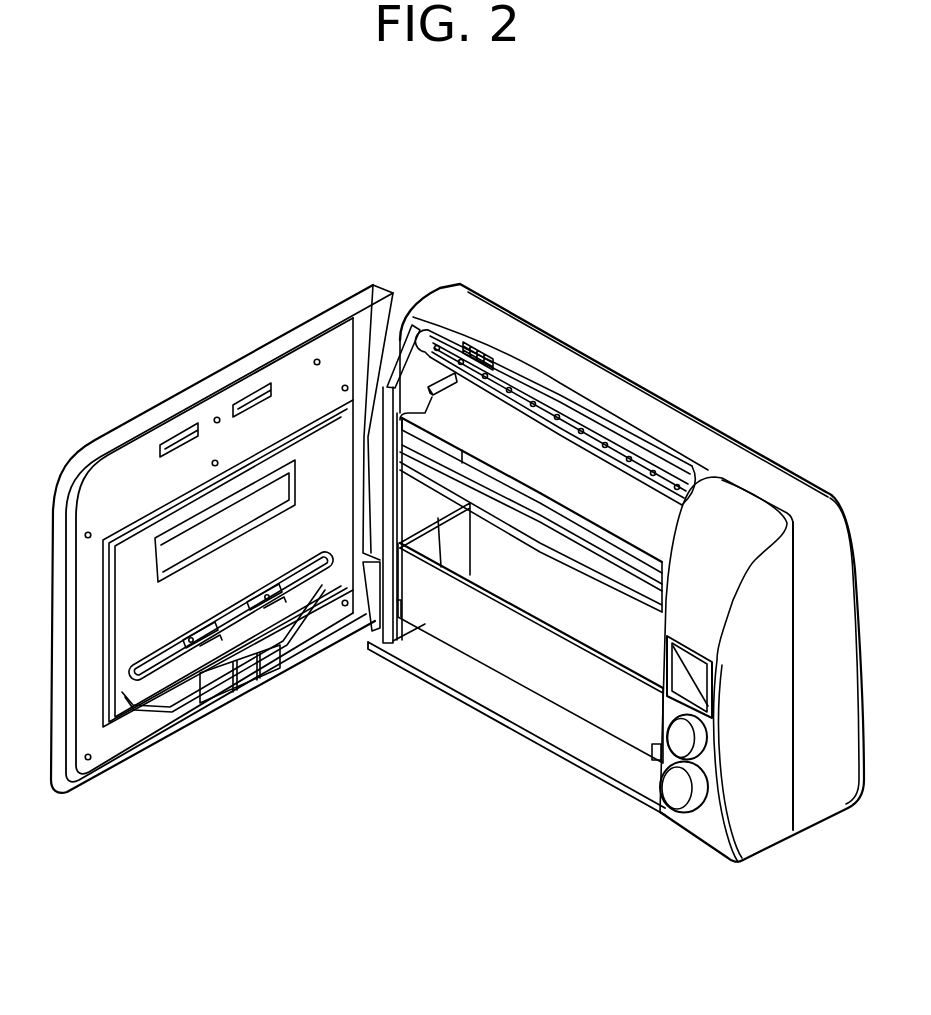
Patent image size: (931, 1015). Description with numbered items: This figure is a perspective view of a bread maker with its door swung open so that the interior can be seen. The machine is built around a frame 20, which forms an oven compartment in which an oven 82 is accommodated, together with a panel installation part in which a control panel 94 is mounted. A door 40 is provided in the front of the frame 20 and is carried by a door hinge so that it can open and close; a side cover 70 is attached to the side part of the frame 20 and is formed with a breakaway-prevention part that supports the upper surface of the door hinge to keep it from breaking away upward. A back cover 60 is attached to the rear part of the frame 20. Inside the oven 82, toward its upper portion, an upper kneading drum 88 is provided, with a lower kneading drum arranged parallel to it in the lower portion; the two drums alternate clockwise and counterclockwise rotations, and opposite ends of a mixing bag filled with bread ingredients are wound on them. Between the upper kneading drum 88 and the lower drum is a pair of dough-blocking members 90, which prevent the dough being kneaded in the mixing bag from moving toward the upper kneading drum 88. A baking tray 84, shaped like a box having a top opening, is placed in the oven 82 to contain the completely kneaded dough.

The frame 20 is at (420, 304).
The door 40 is at (130, 423).
The back cover 60 is at (503, 308).
The side cover 70 is at (397, 302).
The oven 82 is at (520, 453).
The baking tray 84 is at (470, 655).
The upper kneading drum 88 is at (608, 440).
The dough-blocking members 90 is at (623, 575).
The control panel 94 is at (697, 842).